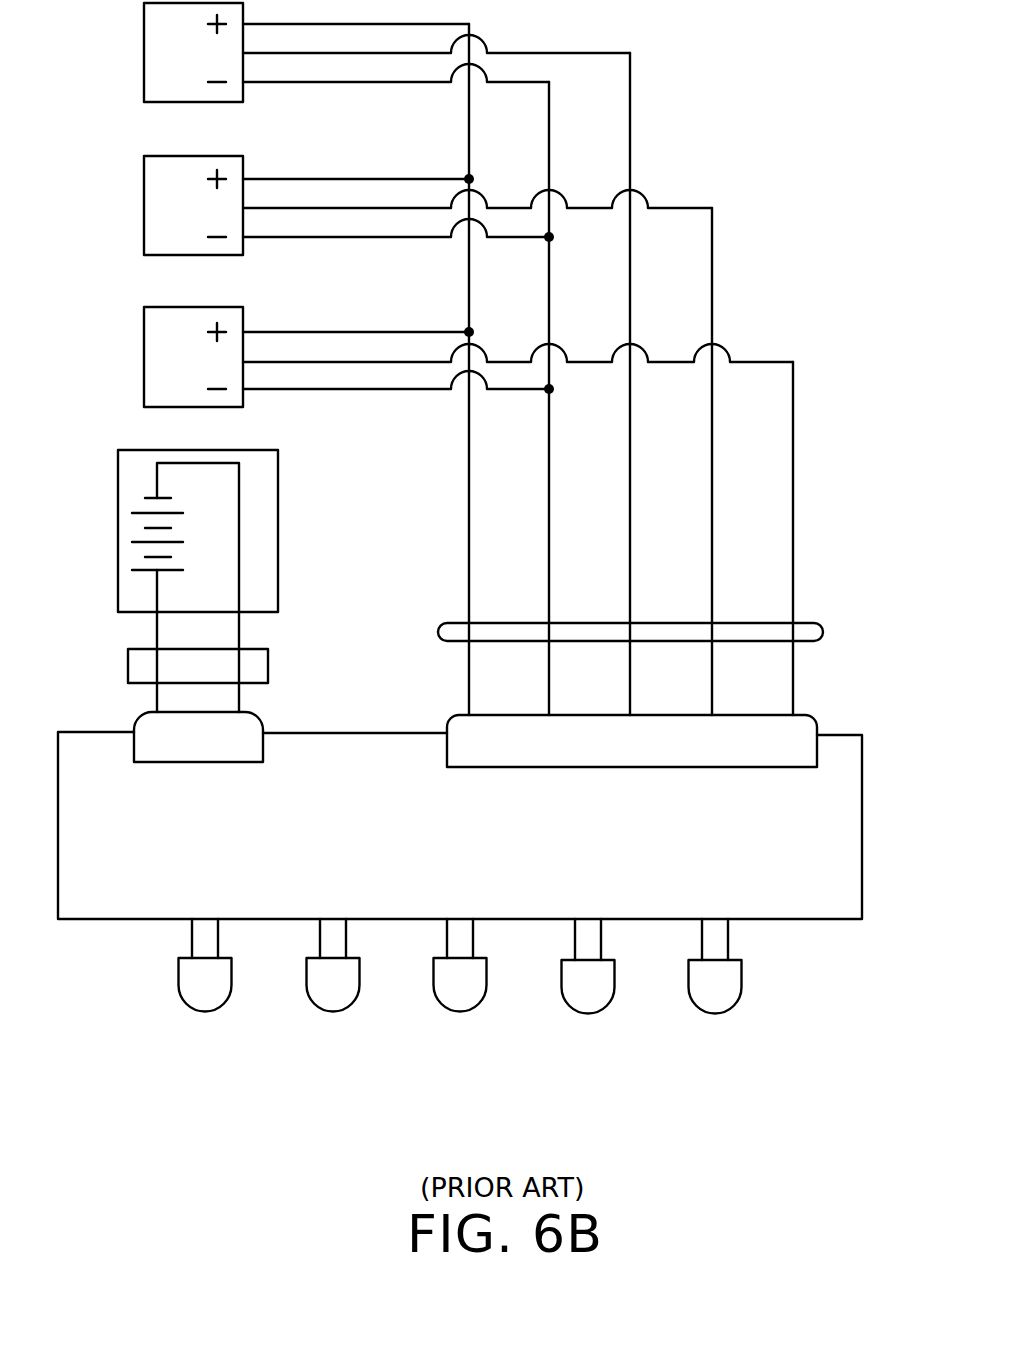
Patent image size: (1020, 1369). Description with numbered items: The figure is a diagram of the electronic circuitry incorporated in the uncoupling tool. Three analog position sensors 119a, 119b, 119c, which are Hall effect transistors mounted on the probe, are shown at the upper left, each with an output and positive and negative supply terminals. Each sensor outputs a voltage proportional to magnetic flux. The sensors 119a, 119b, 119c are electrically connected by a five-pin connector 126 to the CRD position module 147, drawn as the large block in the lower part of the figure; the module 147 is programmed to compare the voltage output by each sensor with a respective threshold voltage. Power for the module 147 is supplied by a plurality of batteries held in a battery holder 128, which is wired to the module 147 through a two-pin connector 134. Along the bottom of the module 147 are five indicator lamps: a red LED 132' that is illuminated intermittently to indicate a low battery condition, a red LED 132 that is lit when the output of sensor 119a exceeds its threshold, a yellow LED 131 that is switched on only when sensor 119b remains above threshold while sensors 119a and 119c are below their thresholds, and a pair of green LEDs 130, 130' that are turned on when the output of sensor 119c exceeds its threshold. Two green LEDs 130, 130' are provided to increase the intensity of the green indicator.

The analog position sensor 119a is at (144, 70).
The analog position sensor 119b is at (144, 232).
The analog position sensor 119c is at (144, 385).
The battery holder 128 is at (278, 502).
The two-pin connector 134 is at (268, 667).
The five-pin connector 126 is at (823, 632).
The CRD position module 147 is at (862, 780).
The red LED 132' is at (157, 988).
The red LED 132 is at (271, 1015).
The yellow LED 131 is at (433, 995).
The green LED 130 is at (632, 1024).
The green LED 130' is at (770, 994).